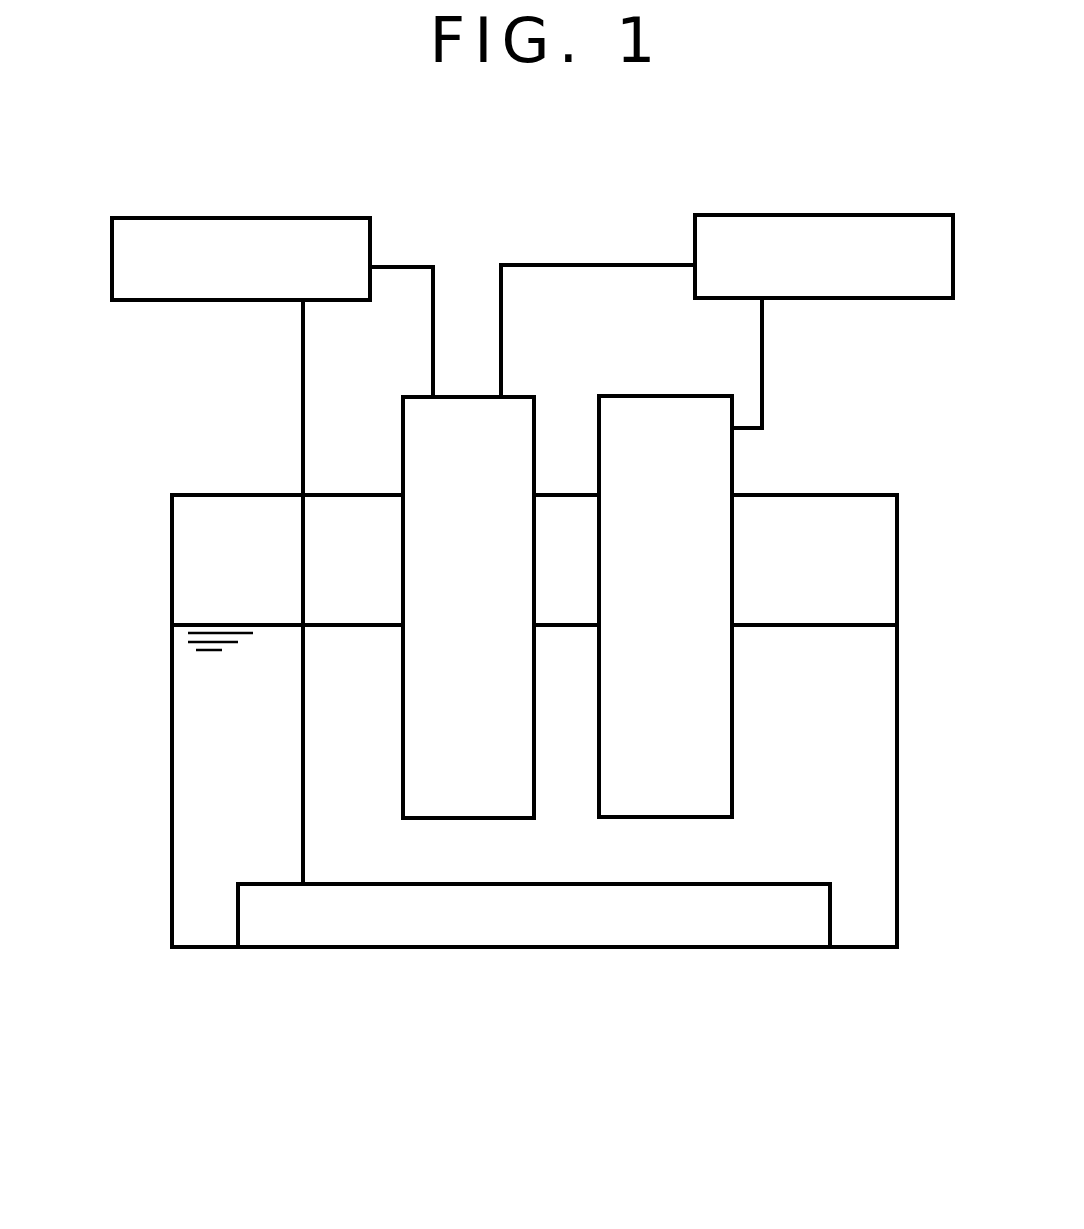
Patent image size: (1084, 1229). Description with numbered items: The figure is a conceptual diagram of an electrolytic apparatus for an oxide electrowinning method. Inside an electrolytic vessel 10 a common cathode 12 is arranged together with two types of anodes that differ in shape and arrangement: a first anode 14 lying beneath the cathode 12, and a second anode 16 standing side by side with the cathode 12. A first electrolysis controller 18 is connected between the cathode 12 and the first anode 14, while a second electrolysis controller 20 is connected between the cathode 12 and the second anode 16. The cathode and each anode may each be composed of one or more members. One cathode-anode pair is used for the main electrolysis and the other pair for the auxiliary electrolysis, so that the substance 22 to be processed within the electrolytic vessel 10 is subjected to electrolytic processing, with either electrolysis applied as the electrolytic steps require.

The electrolytic vessel 10 is at (170, 578).
The cathode 12 is at (420, 435).
The first anode 14 is at (727, 920).
The second anode 16 is at (718, 457).
The first electrolysis controller 18 is at (243, 222).
The second electrolysis controller 20 is at (770, 220).
The substance to be processed 22 is at (205, 778).